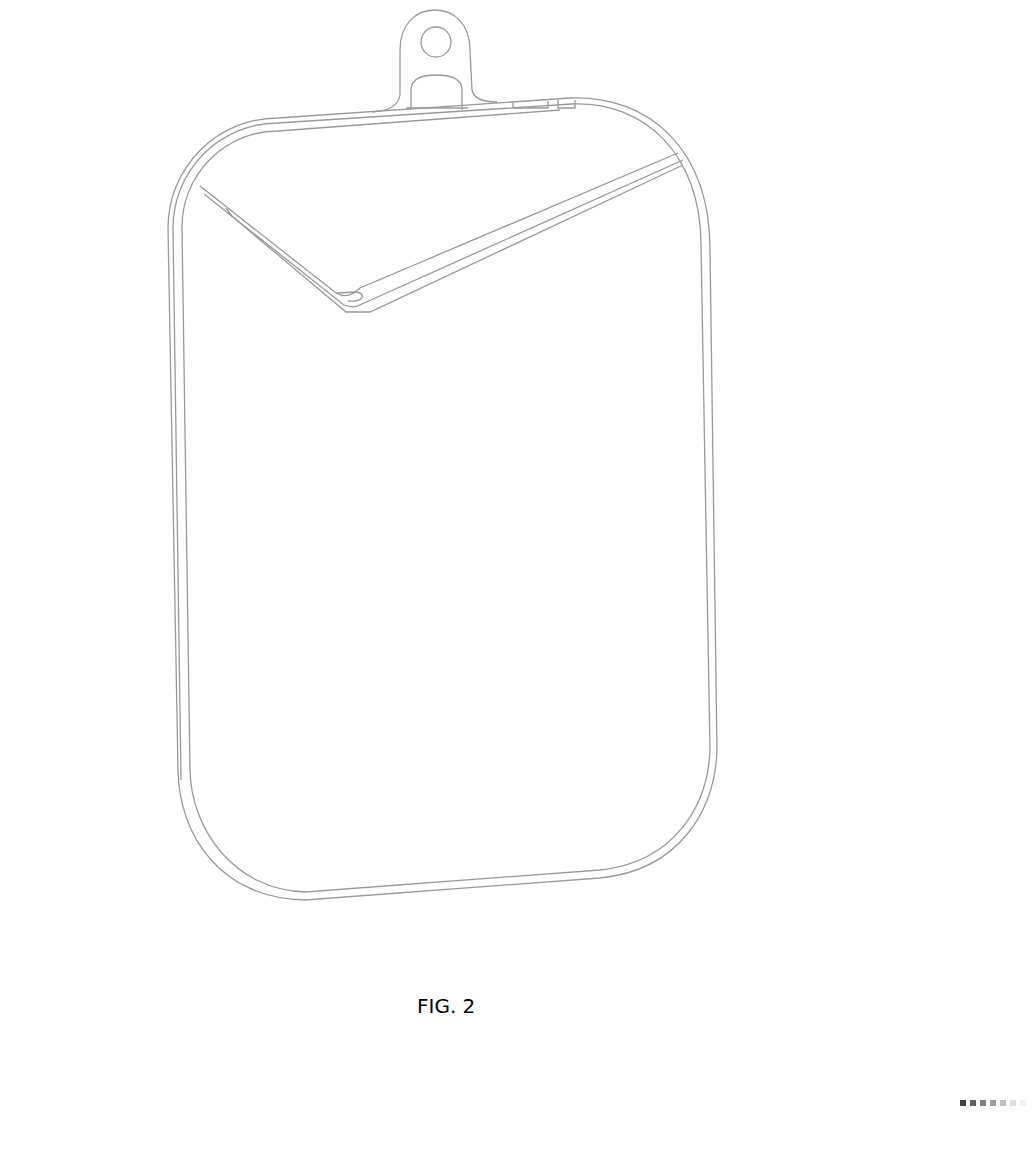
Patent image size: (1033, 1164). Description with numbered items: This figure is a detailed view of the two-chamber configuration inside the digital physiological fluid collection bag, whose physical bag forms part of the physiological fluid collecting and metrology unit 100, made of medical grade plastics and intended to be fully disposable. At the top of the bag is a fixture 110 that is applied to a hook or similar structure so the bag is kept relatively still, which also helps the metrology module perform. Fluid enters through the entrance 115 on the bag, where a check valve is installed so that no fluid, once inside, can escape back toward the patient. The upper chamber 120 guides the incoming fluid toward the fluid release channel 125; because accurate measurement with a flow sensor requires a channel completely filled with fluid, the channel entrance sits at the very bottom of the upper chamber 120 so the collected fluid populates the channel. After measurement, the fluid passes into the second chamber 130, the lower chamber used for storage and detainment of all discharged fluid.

The physiological fluid collecting and metrology unit 100 is at (190, 642).
The fixture 110 is at (460, 58).
The entrance 115 is at (562, 98).
The upper chamber 120 is at (365, 188).
The fluid release channel 125 is at (335, 295).
The second chamber 130 is at (507, 598).